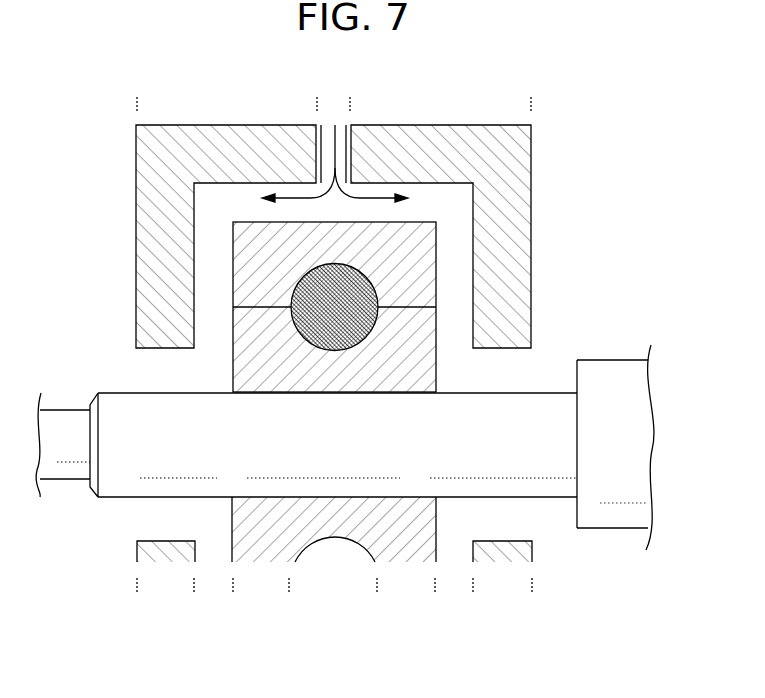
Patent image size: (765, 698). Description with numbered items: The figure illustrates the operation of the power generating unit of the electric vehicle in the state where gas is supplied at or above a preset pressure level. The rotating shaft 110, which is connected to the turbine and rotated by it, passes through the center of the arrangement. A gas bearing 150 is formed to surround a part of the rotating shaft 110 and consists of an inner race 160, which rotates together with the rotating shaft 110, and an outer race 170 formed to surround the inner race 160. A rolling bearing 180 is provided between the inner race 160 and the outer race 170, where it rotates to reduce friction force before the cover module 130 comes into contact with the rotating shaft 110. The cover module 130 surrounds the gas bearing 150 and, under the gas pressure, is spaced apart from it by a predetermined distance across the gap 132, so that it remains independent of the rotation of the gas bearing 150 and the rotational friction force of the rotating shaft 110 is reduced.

The rotating shaft 110 is at (558, 483).
The cover module 130 is at (146, 291).
The recess of housing 132 is at (213, 220).
The gas bearing 150 is at (460, 307).
The inner race 160 is at (420, 335).
The outer race 170 is at (420, 240).
The rolling bearing 180 is at (300, 340).